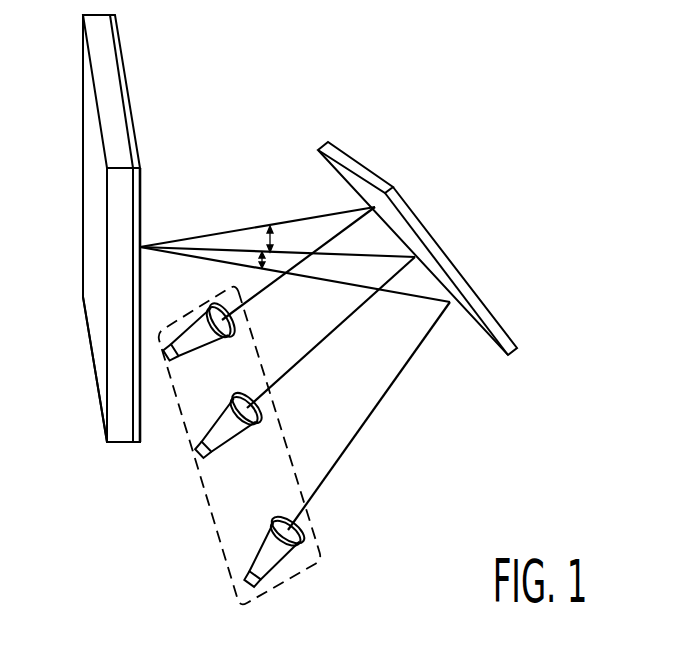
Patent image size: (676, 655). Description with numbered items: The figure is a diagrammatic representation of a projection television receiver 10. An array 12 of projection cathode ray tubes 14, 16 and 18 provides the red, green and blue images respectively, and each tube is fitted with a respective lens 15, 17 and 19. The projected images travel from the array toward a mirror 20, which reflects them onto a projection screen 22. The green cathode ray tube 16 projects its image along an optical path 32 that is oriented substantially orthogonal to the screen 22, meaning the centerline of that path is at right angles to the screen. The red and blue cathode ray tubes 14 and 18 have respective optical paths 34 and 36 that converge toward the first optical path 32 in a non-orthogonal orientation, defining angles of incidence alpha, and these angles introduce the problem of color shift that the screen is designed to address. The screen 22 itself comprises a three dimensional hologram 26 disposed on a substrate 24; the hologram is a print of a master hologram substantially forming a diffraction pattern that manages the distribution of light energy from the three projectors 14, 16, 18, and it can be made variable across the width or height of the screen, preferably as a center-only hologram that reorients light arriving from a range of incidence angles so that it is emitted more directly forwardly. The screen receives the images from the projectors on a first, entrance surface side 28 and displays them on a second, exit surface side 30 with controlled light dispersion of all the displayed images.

The projection television receiver 10 is at (337, 387).
The array of projection cathode ray tubes 12 is at (257, 496).
The red projection cathode ray tube 14 is at (206, 347).
The lens 15 is at (230, 340).
The green projection cathode ray tube 16 is at (233, 440).
The lens 17 is at (257, 427).
The blue projection cathode ray tube 18 is at (260, 547).
The lens 19 is at (313, 540).
The mirror 20 is at (440, 245).
The projection screen 22 is at (141, 383).
The substrate 24 is at (125, 78).
The three dimensional hologram 26 is at (118, 435).
The entrance surface side 28 is at (142, 182).
The exit surface side 30 is at (92, 300).
The optical path 32 is at (208, 258).
The optical path 34 is at (240, 228).
The optical path 36 is at (327, 283).